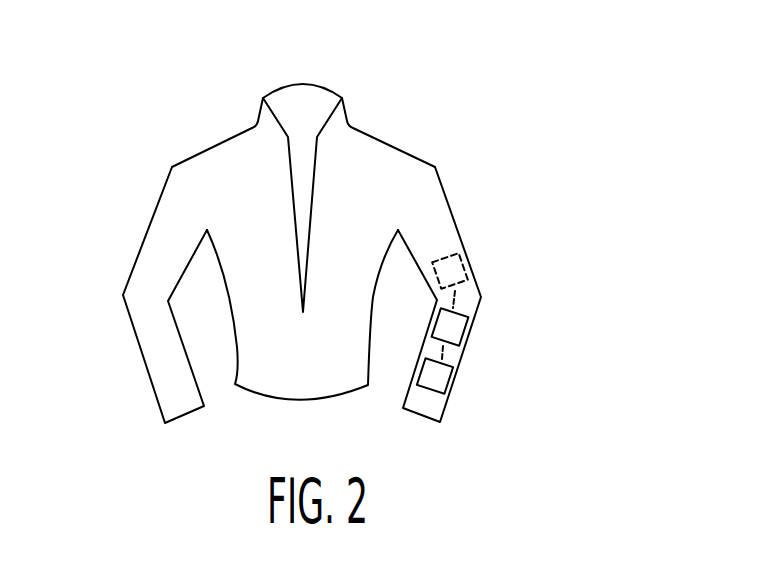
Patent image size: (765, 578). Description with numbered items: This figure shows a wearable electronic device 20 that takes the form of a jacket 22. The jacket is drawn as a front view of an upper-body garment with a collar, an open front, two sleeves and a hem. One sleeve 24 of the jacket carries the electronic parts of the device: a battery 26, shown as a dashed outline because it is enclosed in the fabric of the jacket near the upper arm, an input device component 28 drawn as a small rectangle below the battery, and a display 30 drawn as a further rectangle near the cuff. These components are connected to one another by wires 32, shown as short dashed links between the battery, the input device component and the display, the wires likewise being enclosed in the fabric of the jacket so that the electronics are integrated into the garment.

The wearable electronic device 20 is at (397, 148).
The jacket 22 is at (173, 210).
The sleeve 24 is at (430, 195).
The battery 26 is at (462, 262).
The input device component 28 is at (450, 327).
The display 30 is at (438, 375).
The wires 32 is at (455, 303).